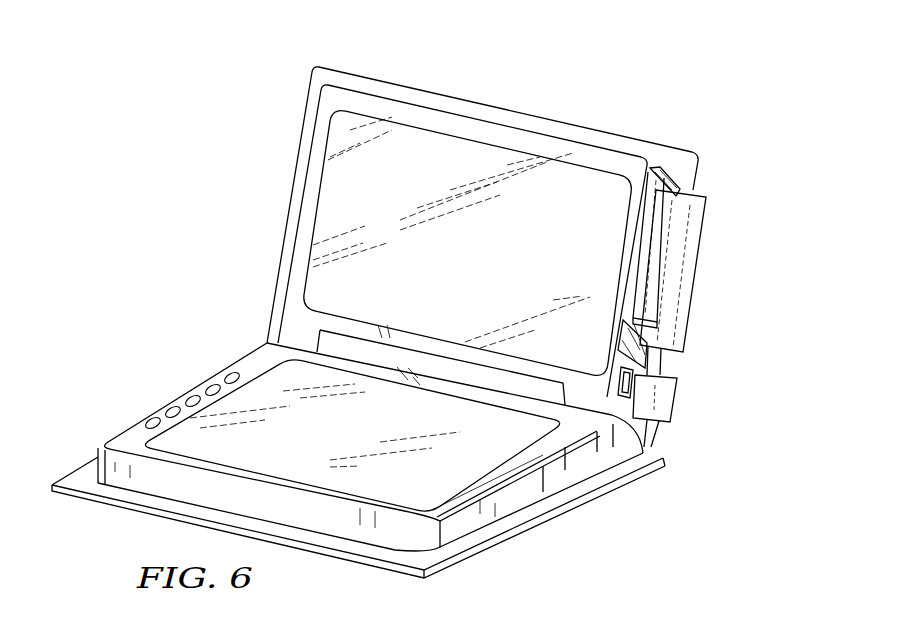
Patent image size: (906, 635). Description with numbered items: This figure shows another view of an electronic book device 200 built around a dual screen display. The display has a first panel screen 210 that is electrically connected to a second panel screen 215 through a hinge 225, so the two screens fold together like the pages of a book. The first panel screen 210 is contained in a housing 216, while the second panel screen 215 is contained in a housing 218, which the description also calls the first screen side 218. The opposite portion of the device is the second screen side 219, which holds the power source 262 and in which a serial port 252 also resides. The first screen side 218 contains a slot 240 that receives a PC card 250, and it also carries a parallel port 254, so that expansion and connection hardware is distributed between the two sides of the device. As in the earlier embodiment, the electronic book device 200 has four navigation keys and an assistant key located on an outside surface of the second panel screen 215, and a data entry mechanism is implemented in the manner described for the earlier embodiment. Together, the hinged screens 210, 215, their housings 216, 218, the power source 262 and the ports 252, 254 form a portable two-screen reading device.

The electronic book device 200 is at (330, 50).
The first panel screen 210 is at (507, 153).
The second panel screen 215 is at (262, 384).
The housing 216 is at (640, 157).
The housing 218 is at (640, 357).
The second screen side 219 is at (557, 470).
The hinge 225 is at (636, 437).
The slot 240 is at (640, 305).
The PC card 250 is at (660, 255).
The serial port 252 is at (587, 458).
The parallel port 254 is at (640, 395).
The power source 262 is at (513, 497).